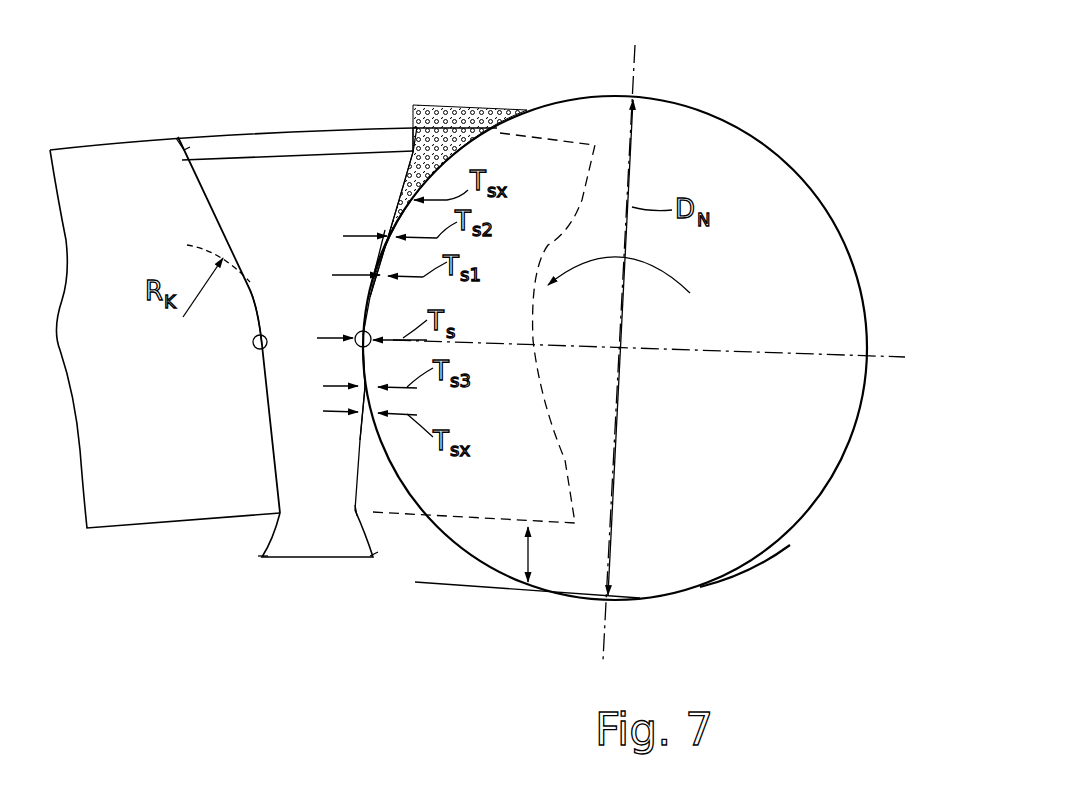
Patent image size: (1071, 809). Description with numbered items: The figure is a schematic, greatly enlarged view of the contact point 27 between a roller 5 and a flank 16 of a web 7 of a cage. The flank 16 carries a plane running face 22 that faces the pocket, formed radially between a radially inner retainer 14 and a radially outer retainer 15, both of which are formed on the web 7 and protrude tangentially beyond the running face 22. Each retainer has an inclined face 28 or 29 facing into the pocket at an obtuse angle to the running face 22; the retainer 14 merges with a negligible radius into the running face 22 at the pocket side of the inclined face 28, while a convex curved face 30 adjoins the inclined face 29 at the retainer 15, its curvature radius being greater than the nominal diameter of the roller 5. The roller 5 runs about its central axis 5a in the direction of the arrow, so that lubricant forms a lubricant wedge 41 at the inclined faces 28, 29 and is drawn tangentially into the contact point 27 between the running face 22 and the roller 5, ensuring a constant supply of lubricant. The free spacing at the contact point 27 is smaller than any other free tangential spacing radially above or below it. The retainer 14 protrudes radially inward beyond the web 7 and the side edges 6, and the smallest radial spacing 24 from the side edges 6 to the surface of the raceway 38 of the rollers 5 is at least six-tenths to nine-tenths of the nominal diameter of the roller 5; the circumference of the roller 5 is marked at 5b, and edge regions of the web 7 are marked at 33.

The roller 5 is at (700, 133).
The central axis 5a is at (620, 345).
The hub outer circumference 5b is at (722, 575).
The side edge 6 is at (177, 498).
The web 7 is at (290, 205).
The retainer 14 is at (285, 536).
The retainer 15 is at (207, 165).
The flank 16 is at (273, 423).
The running face 22 is at (367, 397).
The smallest radial spacing 24 is at (530, 558).
The contact point 27 is at (355, 345).
The inclined face 28 is at (203, 208).
The inclined face 29 is at (363, 515).
The curved face 30 is at (253, 300).
The edge 33 is at (180, 148).
The raceway 38 is at (547, 592).
The lubricant wedge 41 is at (437, 160).